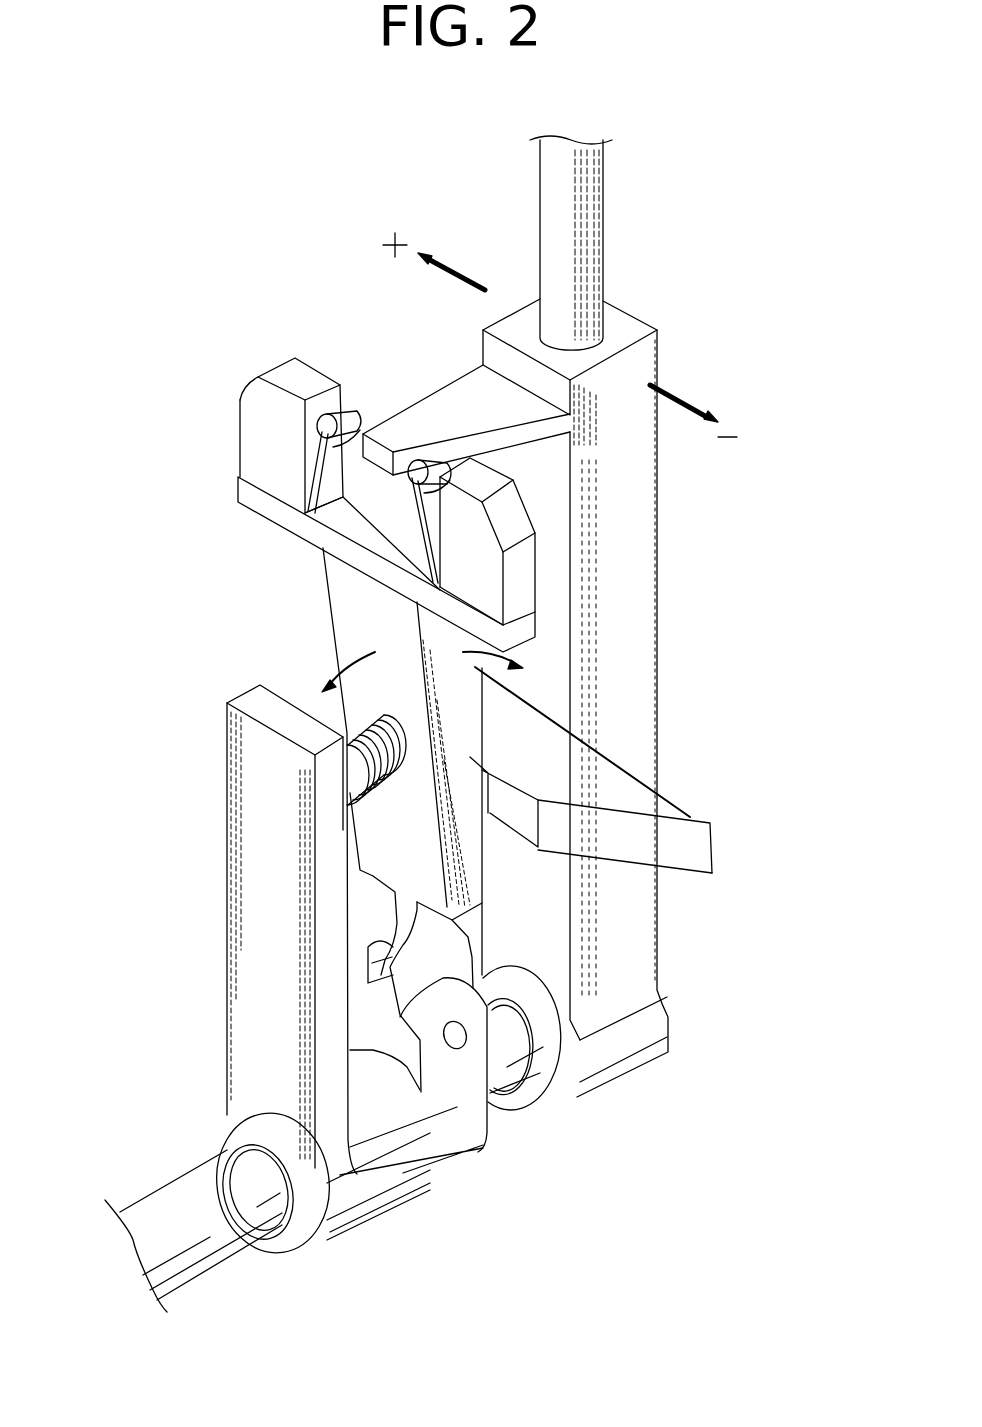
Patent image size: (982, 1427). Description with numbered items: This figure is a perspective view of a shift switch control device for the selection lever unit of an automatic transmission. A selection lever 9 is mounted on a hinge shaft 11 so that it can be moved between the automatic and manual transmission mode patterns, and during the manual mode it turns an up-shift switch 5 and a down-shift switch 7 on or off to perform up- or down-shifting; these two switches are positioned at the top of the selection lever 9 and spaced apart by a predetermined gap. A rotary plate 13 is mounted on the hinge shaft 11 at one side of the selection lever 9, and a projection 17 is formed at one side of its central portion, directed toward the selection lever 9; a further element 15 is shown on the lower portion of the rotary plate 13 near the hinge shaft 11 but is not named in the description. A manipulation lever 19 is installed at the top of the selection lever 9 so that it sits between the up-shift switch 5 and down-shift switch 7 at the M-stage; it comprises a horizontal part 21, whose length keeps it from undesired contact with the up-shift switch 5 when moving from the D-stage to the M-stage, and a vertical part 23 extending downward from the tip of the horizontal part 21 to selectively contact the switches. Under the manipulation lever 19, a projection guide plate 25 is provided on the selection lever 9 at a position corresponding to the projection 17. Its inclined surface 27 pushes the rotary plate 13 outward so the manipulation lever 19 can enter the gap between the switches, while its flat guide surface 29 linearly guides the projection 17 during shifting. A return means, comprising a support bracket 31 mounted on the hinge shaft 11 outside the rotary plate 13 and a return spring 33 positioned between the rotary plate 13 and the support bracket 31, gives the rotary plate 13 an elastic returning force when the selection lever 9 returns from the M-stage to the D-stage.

The up-shift switch 5 is at (248, 415).
The down-shift switch 7 is at (492, 565).
The selection lever 9 is at (598, 208).
The hinge shaft 11 is at (217, 1267).
The rotary plate 13 is at (333, 596).
The pivot hole 15 is at (460, 1042).
The projection 17 is at (641, 819).
The manipulation lever 19 is at (409, 330).
The horizontal part 21 is at (423, 405).
The vertical part 23 is at (383, 453).
The projection guide plate 25 is at (700, 812).
The inclined surface 27 is at (710, 850).
The flat guide surface 29 is at (530, 820).
The support bracket 31 is at (240, 805).
The return spring 33 is at (347, 733).